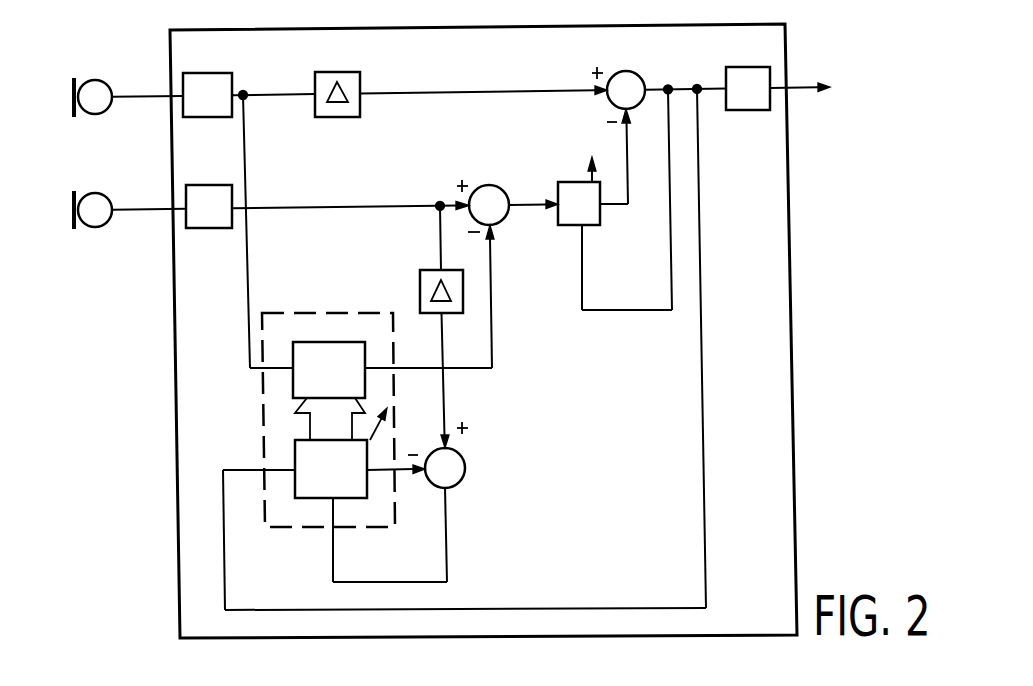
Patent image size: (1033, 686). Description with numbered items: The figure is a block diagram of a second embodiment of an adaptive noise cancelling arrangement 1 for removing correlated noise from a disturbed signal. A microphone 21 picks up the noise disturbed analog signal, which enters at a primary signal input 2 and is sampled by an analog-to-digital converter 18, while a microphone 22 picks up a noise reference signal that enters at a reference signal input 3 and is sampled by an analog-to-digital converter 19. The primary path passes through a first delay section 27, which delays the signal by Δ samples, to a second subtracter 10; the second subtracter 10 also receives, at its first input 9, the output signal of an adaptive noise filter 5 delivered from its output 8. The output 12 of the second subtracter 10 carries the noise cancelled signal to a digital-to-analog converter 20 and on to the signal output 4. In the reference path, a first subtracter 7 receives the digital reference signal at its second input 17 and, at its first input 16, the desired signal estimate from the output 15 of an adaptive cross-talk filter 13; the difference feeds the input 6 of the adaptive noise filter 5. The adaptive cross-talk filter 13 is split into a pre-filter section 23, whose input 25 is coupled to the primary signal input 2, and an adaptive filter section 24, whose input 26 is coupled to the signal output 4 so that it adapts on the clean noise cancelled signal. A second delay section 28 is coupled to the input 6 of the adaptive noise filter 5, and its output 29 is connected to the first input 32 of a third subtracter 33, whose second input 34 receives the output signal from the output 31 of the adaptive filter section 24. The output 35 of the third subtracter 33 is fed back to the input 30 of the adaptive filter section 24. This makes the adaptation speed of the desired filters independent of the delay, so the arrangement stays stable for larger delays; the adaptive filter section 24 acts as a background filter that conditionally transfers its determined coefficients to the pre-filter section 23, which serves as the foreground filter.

The adaptive noise cancelling arrangement 1 is at (785, 240).
The primary signal input 2 is at (169, 92).
The reference signal input 3 is at (170, 206).
The signal output 4 is at (790, 87).
The adaptive noise filter 5 is at (573, 181).
The input of adaptive noise filter 6 is at (556, 196).
The first subtracter 7 is at (497, 193).
The output of adaptive noise filter 8 is at (601, 196).
The first input of second subtracter 9 is at (629, 112).
The second subtracter 10 is at (625, 76).
The output of second subtracter 12 is at (646, 87).
The adaptive cross-talk filter 13 is at (318, 313).
The output of adaptive cross-talk filter 15 is at (395, 370).
The first input of first subtracter 16 is at (495, 227).
The second input of first subtracter 17 is at (472, 196).
The analog-to-digital converter 18 is at (205, 118).
The analog-to-digital converter 19 is at (205, 230).
The digital-to-analog converter 20 is at (744, 80).
The microphone 21 is at (84, 81).
The microphone 22 is at (86, 194).
The pre-filter section 23 is at (307, 388).
The adaptive filter section 24 is at (296, 458).
The input of pre-filter section 25 is at (293, 363).
The input of adaptive filter section 26 is at (296, 470).
The first delay section 27 is at (340, 118).
The second delay section 28 is at (420, 278).
The output of second delay section 29 is at (440, 315).
The input of adaptive filter section 30 is at (340, 498).
The output of adaptive filter section 31 is at (398, 462).
The first input of third subtracter 32 is at (457, 452).
The third subtracter 33 is at (465, 469).
The second input of third subtracter 34 is at (422, 474).
The output of third subtracter 35 is at (450, 490).